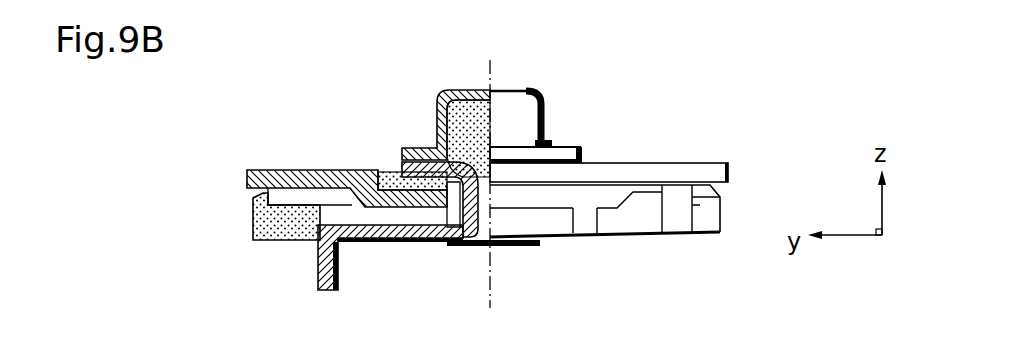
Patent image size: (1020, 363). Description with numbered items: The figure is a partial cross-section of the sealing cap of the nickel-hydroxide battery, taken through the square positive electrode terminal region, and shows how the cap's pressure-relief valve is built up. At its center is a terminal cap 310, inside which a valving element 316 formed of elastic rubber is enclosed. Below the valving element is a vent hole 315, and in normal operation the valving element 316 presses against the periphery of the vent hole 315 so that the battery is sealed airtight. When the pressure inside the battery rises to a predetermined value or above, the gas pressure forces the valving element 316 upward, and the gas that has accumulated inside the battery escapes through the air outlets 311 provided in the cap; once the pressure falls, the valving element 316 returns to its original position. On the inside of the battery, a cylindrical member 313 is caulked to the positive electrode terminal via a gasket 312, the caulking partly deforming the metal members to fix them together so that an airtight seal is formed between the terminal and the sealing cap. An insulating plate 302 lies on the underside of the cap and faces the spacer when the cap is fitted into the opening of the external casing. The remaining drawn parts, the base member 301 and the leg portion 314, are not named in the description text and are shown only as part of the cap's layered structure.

The holder / base member 301 is at (705, 163).
The insulating plate 302 is at (712, 217).
The terminal cap 310 is at (522, 106).
The air outlets 311 is at (494, 148).
The gasket 312 is at (388, 172).
The cylindrical member 313 is at (470, 248).
The leg portion 314 is at (338, 275).
The vent hole 315 is at (493, 250).
The valving element 316 is at (441, 91).